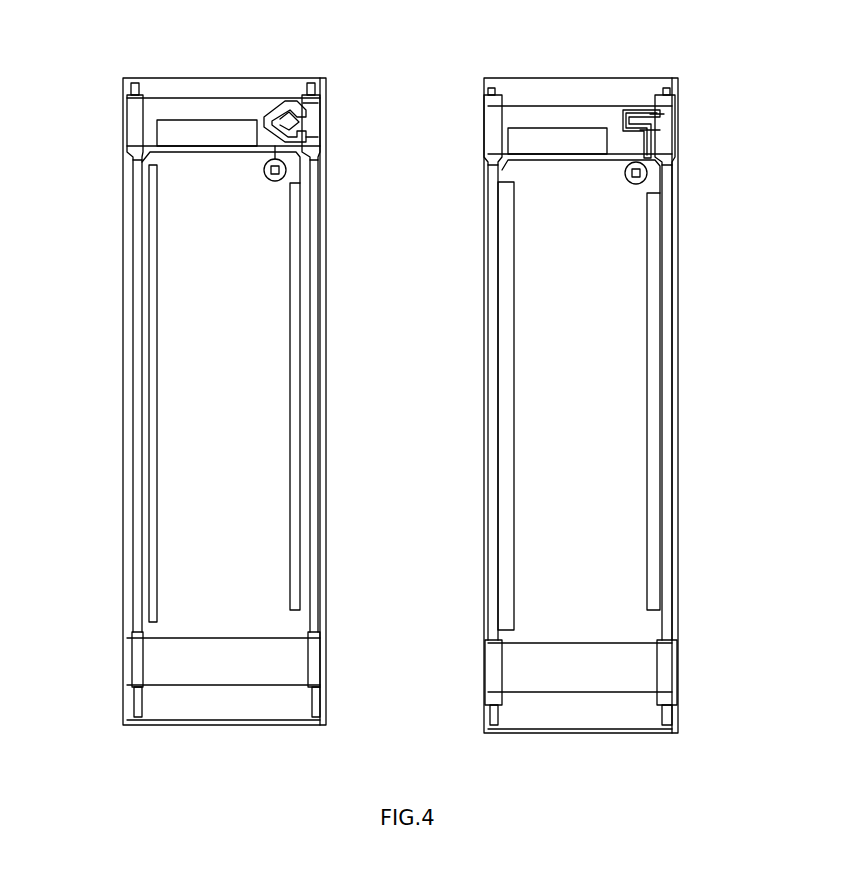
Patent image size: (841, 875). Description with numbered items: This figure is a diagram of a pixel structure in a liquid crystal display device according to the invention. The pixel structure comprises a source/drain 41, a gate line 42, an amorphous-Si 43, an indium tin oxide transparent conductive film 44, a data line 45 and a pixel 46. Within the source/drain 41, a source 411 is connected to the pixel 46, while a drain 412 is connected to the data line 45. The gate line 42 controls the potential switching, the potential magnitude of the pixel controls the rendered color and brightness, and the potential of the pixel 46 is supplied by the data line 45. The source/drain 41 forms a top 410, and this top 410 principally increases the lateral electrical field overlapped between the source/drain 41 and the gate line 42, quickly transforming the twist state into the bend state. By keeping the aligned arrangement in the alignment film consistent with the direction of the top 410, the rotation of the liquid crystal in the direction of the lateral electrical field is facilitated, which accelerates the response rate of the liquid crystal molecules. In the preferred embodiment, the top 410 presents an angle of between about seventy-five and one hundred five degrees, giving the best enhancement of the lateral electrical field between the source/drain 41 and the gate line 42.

The source/drain 41 is at (536, 94).
The top 410 is at (274, 120).
The source 411 is at (320, 137).
The drain 412 is at (313, 100).
The gate line 42 is at (186, 105).
The amorphous-Si 43 is at (134, 150).
The indium tin oxide transparent conductive film 44 is at (265, 255).
The data line 45 is at (312, 198).
The pixel 46 is at (108, 444).